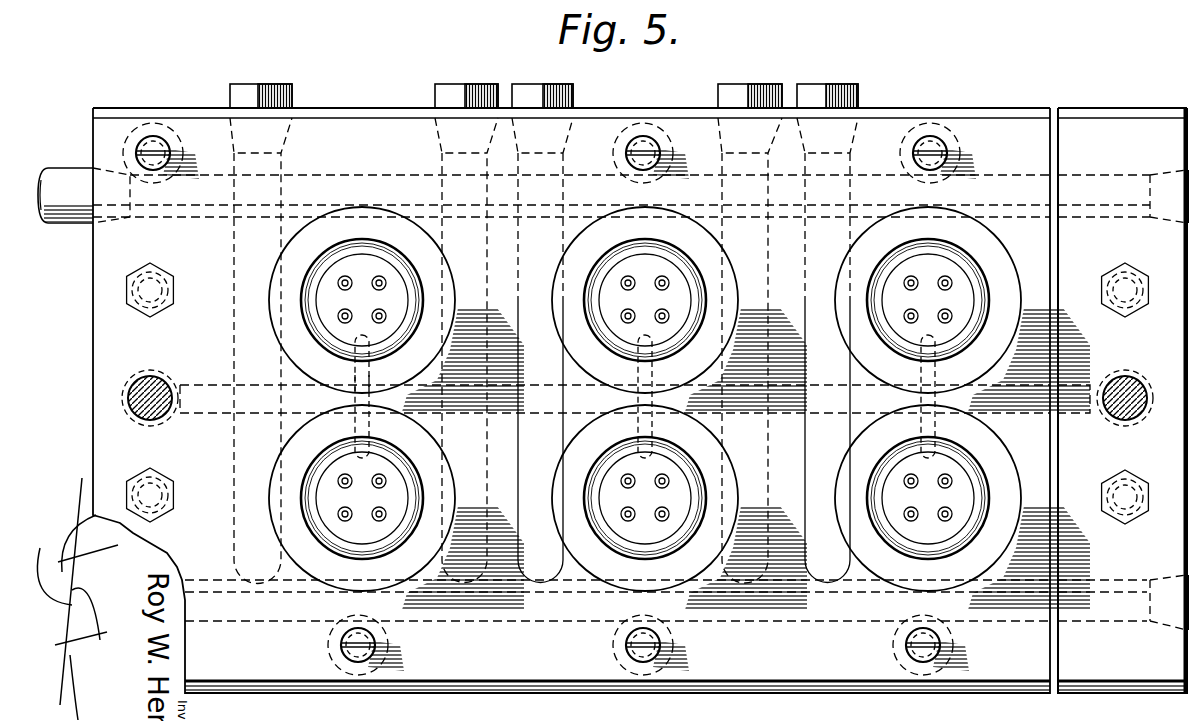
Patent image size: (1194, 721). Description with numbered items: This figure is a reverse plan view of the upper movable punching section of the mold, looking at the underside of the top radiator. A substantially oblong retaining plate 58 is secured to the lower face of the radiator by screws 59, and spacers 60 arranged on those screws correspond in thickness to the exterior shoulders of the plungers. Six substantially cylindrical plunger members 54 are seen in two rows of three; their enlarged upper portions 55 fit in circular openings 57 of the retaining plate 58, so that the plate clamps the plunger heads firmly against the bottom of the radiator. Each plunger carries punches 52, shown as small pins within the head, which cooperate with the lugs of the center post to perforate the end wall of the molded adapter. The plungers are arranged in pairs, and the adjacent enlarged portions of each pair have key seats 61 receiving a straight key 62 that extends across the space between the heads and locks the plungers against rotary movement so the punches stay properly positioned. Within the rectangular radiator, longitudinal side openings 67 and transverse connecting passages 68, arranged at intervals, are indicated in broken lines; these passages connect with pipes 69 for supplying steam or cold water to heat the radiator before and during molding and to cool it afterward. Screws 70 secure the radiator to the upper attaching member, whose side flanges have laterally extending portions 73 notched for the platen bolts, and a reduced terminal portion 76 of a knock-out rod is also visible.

The punches 52 is at (343, 284).
The plunger members 54 is at (664, 283).
The enlarged upper portions 55 is at (272, 285).
The circular openings 57 is at (275, 268).
The retaining plate 58 is at (100, 291).
The screws 59 is at (135, 149).
The spacers 60 is at (172, 130).
The key seats 61 is at (369, 386).
The key 62 is at (357, 381).
The longitudinal side openings 67 is at (310, 190).
The transverse connecting passages 68 is at (233, 566).
The pipes 69 is at (68, 210).
The screws 70 is at (160, 314).
The laterally extending portions 73 is at (166, 108).
The reduced lower terminal portion 76 is at (146, 376).